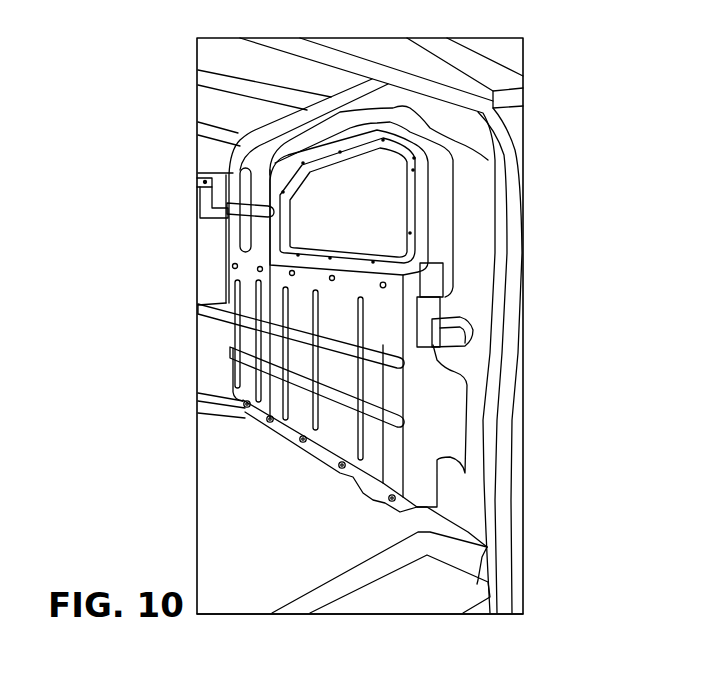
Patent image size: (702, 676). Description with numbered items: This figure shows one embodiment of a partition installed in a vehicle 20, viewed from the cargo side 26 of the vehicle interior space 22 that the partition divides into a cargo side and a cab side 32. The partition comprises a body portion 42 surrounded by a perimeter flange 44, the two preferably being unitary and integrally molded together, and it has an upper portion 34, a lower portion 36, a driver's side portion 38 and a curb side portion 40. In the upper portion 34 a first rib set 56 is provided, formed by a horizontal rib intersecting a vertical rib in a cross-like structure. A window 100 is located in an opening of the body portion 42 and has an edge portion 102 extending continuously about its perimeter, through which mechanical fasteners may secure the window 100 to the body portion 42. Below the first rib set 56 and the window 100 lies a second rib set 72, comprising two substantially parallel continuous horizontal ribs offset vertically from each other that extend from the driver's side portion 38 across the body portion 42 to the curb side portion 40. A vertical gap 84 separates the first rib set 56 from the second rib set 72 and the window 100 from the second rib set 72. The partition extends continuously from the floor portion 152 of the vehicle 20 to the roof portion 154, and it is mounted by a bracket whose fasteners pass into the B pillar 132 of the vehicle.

The roof portion 154 is at (210, 55).
The driver's side portion 38 is at (258, 108).
The perimeter flange 44 is at (347, 105).
The curb side portion 40 is at (427, 77).
The B pillar 132 is at (482, 288).
The upper portion 34 is at (210, 174).
The first rib set 56 is at (206, 211).
The body portion 42 is at (238, 238).
The vertical gap 84 is at (212, 268).
The second rib set 72 is at (222, 306).
The lower portion 36 is at (216, 343).
The vehicle interior space 22 is at (206, 442).
The vehicle 20 is at (216, 494).
The cargo side 26 is at (236, 533).
The floor portion 152 is at (316, 550).
The edge portion 102 is at (403, 157).
The window 100 is at (397, 203).
The cab side 32 is at (455, 418).